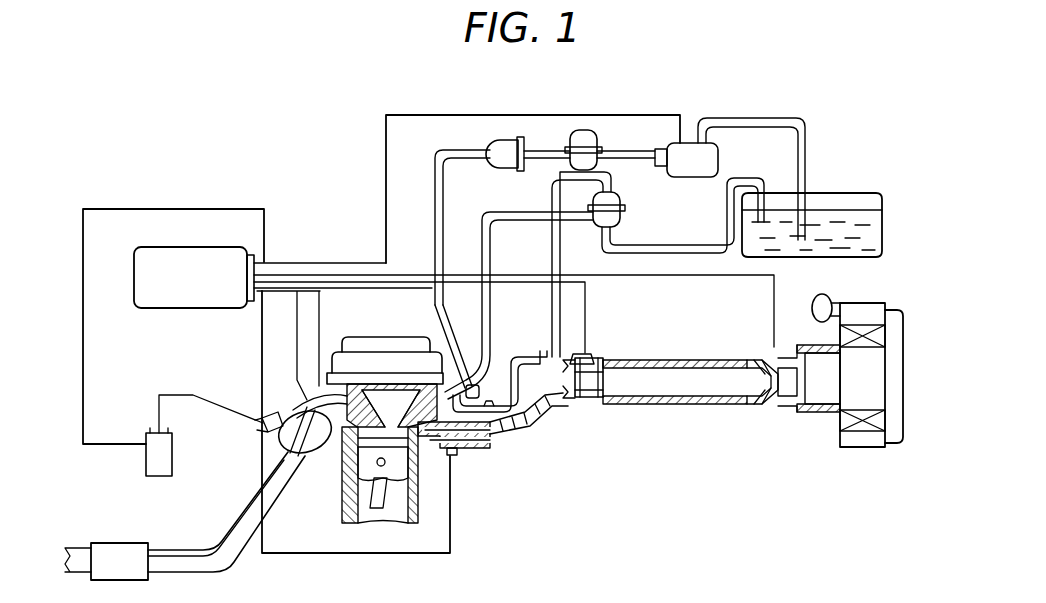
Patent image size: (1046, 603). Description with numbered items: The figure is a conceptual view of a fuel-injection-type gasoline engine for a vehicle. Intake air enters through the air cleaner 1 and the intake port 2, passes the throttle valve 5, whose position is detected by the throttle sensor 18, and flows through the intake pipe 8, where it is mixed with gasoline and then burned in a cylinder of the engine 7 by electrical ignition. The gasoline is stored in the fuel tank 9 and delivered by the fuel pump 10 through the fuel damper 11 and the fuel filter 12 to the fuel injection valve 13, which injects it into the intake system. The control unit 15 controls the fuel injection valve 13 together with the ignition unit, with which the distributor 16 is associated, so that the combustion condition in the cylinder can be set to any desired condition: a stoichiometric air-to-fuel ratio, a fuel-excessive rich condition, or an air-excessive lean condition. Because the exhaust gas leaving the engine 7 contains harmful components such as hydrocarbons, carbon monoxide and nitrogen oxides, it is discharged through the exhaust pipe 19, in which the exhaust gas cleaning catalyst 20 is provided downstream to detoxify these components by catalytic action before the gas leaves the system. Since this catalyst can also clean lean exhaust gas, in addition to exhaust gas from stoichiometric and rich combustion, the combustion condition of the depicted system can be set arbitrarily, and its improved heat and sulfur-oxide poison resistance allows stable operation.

The air cleaner 1 is at (858, 448).
The intake port 2 is at (833, 300).
The throttle valve 5 is at (585, 400).
The engine 7 is at (372, 337).
The intake pipe 8 is at (498, 428).
The fuel tank 9 is at (827, 193).
The fuel pump 10 is at (693, 142).
The fuel damper 11 is at (598, 130).
The fuel filter 12 is at (493, 140).
The fuel injection valve 13 is at (478, 383).
The control unit 15 is at (182, 247).
The distributor 16 is at (258, 432).
The throttle sensor 18 is at (454, 456).
The exhaust pipe 19 is at (170, 548).
The exhaust gas cleaning catalyst 20 is at (120, 542).